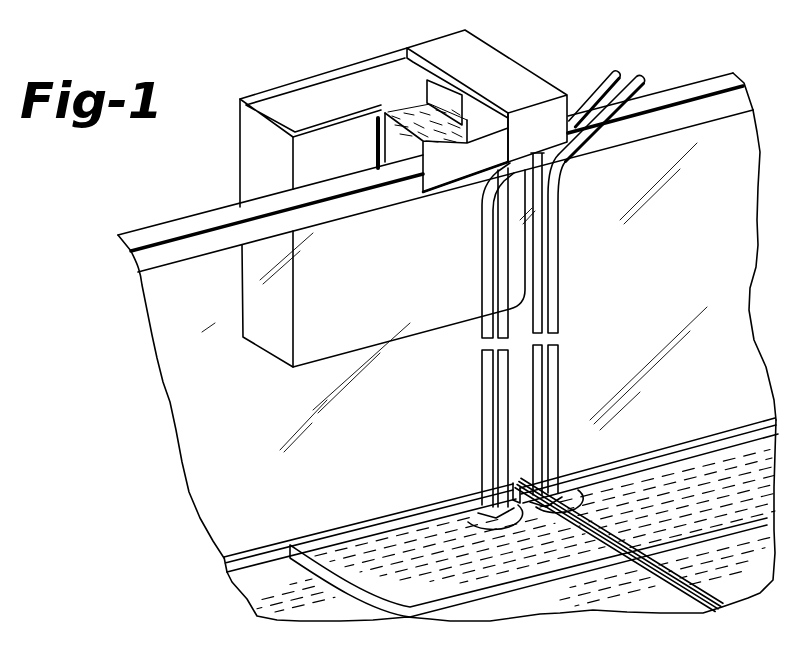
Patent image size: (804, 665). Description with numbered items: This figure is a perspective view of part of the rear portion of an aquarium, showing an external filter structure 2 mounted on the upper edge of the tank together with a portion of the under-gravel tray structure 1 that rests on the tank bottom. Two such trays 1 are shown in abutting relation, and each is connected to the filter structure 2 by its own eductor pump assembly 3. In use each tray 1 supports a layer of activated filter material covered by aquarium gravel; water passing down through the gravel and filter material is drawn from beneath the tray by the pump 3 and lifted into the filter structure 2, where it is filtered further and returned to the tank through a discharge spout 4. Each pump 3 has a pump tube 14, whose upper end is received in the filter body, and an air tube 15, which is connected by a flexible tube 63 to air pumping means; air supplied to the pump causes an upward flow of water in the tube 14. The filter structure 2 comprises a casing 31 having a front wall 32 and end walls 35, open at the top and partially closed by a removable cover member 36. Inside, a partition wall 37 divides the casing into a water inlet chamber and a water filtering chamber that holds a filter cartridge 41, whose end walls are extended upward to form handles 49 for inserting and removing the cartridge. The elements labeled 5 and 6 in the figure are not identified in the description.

The under-gravel tray structure 1 is at (627, 630).
The external filter structure 2 is at (230, 156).
The eductor pump assembly 3 is at (566, 369).
The discharge spout 4 is at (444, 176).
The floor grating 5 is at (425, 534).
The floor rail 6 is at (352, 517).
The pump tube 14 is at (528, 404).
The air tube 15 is at (557, 223).
The casing 31 is at (292, 77).
The front wall 32 is at (327, 147).
The end wall 35 is at (250, 173).
The cover member 36 is at (493, 63).
The partition wall 37 is at (366, 78).
The filter cartridge 41 is at (405, 98).
The handle 49 is at (450, 87).
The flexible tube 63 is at (628, 73).